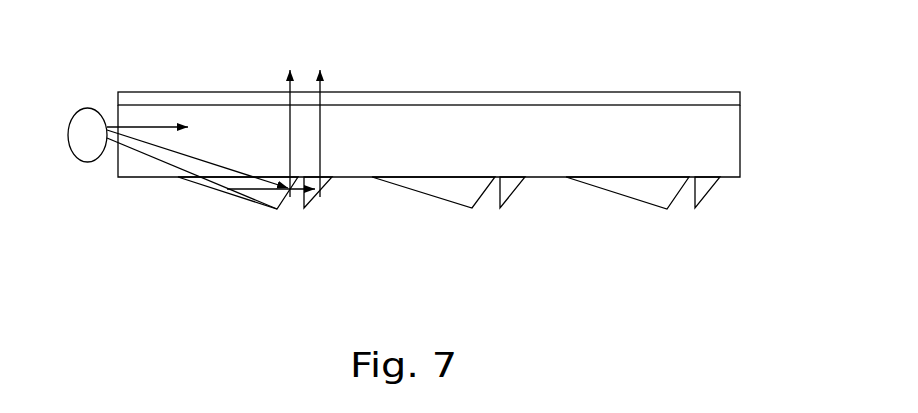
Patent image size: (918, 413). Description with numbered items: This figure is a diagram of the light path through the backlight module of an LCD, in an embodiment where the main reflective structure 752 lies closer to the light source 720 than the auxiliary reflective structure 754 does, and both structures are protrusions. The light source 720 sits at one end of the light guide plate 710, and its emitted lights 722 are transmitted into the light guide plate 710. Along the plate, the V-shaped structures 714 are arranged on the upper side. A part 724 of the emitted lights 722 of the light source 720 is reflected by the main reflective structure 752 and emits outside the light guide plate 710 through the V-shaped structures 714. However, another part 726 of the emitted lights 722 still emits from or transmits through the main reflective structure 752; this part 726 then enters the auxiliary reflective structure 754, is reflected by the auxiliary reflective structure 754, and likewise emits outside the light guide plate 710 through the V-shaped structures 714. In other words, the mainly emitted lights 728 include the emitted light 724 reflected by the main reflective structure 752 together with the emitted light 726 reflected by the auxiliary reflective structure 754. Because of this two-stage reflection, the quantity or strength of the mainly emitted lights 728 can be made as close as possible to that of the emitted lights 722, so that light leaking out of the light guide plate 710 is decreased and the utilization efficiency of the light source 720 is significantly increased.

The light guide plate 710 is at (762, 90).
The V-shaped structures 714 is at (600, 100).
The light source 720 is at (90, 108).
The emitted lights 722 is at (128, 120).
The part of the emitted lights 724 is at (157, 157).
The another part of the emitted lights 726 is at (298, 192).
The mainly emitted lights 728 is at (305, 120).
The main reflective structure 752 is at (258, 203).
The auxiliary reflective structure 754 is at (315, 206).